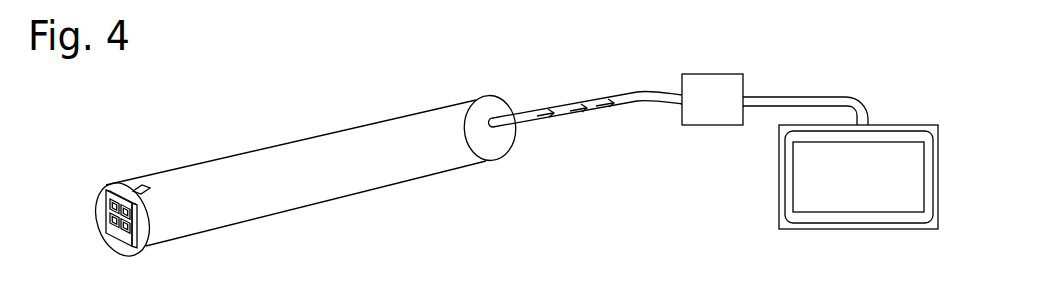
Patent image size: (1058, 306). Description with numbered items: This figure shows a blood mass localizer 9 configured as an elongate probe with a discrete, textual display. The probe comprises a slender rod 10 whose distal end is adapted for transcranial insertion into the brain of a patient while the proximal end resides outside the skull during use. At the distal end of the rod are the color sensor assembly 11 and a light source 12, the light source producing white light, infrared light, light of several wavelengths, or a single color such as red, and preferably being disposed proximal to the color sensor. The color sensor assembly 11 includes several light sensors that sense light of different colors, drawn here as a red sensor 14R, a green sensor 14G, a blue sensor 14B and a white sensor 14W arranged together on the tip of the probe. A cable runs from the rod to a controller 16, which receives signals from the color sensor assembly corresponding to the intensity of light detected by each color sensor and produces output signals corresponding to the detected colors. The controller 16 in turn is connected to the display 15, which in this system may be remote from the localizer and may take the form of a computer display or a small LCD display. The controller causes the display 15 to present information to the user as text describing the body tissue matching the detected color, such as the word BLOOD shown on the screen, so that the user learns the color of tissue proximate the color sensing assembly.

The blood mass localizer 9 is at (236, 104).
The slender rod 10 is at (311, 170).
The color sensor assembly 11 is at (123, 203).
The light source 12 is at (165, 196).
The white light sensor 14W is at (111, 207).
The red light sensor 14R is at (113, 230).
The green light sensor 14G is at (134, 249).
The blue light sensor 14B is at (134, 225).
The display 15 is at (913, 124).
The controller 16 is at (708, 67).